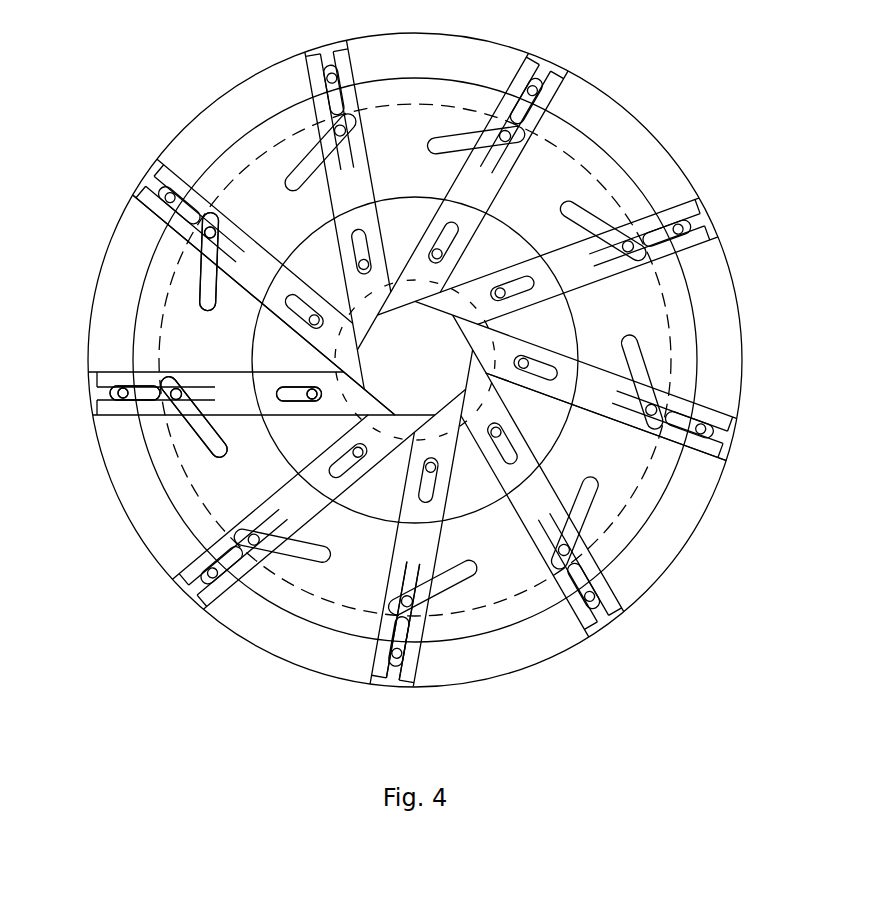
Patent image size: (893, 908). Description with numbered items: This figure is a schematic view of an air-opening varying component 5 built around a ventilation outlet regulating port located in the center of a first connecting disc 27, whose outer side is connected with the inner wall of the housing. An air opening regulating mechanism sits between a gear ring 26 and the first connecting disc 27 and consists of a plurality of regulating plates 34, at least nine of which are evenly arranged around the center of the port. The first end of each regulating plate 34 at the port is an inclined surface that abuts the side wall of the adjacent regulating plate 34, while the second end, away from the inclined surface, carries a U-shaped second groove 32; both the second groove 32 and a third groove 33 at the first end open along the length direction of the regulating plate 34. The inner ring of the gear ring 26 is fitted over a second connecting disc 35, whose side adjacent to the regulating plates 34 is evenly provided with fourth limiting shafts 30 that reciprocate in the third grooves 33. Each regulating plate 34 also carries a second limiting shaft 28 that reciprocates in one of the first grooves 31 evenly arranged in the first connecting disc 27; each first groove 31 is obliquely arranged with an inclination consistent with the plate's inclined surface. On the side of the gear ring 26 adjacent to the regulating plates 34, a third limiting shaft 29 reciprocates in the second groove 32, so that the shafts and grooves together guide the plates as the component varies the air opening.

The cutter disc 5 is at (440, 363).
The gear ring 26 is at (668, 537).
The first connecting disc 27 is at (498, 622).
The second limiting shaft 28 is at (172, 410).
The third limiting shaft 29 is at (135, 395).
The fourth limiting shaft 30 is at (310, 392).
The first groove 31 is at (200, 258).
The second groove 32 is at (385, 410).
The third groove 33 is at (378, 318).
The regulating plate 34 is at (400, 562).
The second connecting disc 35 is at (560, 318).